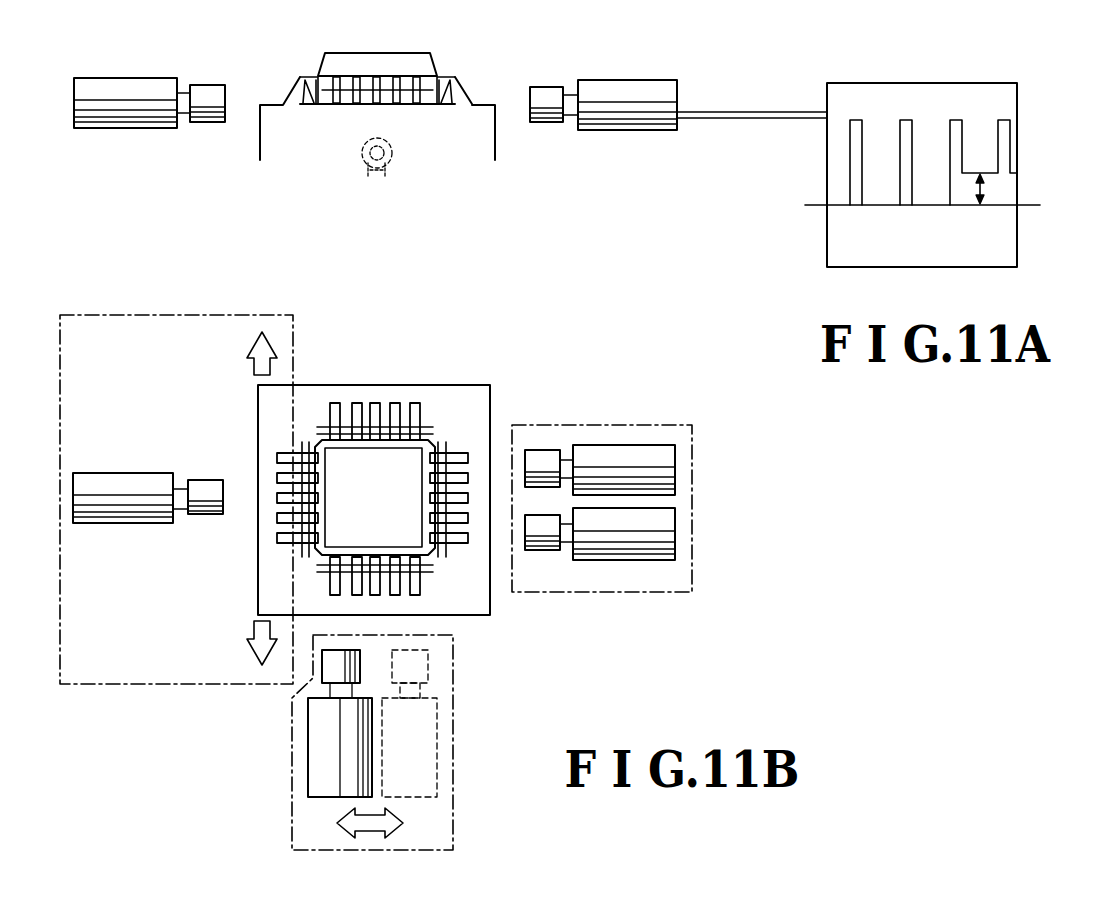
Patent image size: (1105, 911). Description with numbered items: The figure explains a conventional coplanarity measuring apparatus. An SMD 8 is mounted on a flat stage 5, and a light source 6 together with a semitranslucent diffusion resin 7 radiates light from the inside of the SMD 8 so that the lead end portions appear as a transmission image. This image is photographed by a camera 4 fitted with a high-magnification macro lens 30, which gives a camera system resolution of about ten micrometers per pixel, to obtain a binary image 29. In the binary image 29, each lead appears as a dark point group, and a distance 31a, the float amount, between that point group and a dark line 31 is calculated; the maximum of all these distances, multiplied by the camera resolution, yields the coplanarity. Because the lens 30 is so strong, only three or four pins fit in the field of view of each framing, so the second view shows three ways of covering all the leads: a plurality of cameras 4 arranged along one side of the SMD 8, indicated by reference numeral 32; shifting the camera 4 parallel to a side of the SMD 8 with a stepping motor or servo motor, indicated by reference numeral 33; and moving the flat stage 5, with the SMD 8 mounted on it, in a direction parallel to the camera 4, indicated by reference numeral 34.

In FIG. 11A, the camera 4 is at (98, 110).
In FIG. 11B, the camera 4 is at (632, 462).
In FIG. 11A, the flat stage 5 is at (303, 125).
In FIG. 11B, the flat stage 5 is at (428, 395).
In FIG. 11A, the light source 6 is at (368, 170).
In FIG. 11A, the semitranslucent diffusion resin 7 is at (447, 104).
In FIG. 11B, the semitranslucent diffusion resin 7 is at (442, 442).
In FIG. 11A, the SMD 8 is at (405, 53).
In FIG. 11B, the SMD 8 is at (372, 499).
In FIG. 11A, the binary image 29 is at (970, 83).
In FIG. 11A, the high-magnification macro lens 30 is at (210, 103).
In FIG. 11A, the dark line 31 is at (1030, 207).
In FIG. 11A, the distance (float amount) 31a is at (987, 185).
In FIG. 11B, the plurality of cameras arranged along one side of the SMD 32 is at (695, 455).
In FIG. 11B, the camera shifting scheme 33 is at (292, 785).
In FIG. 11B, the stage moving scheme 34 is at (115, 685).